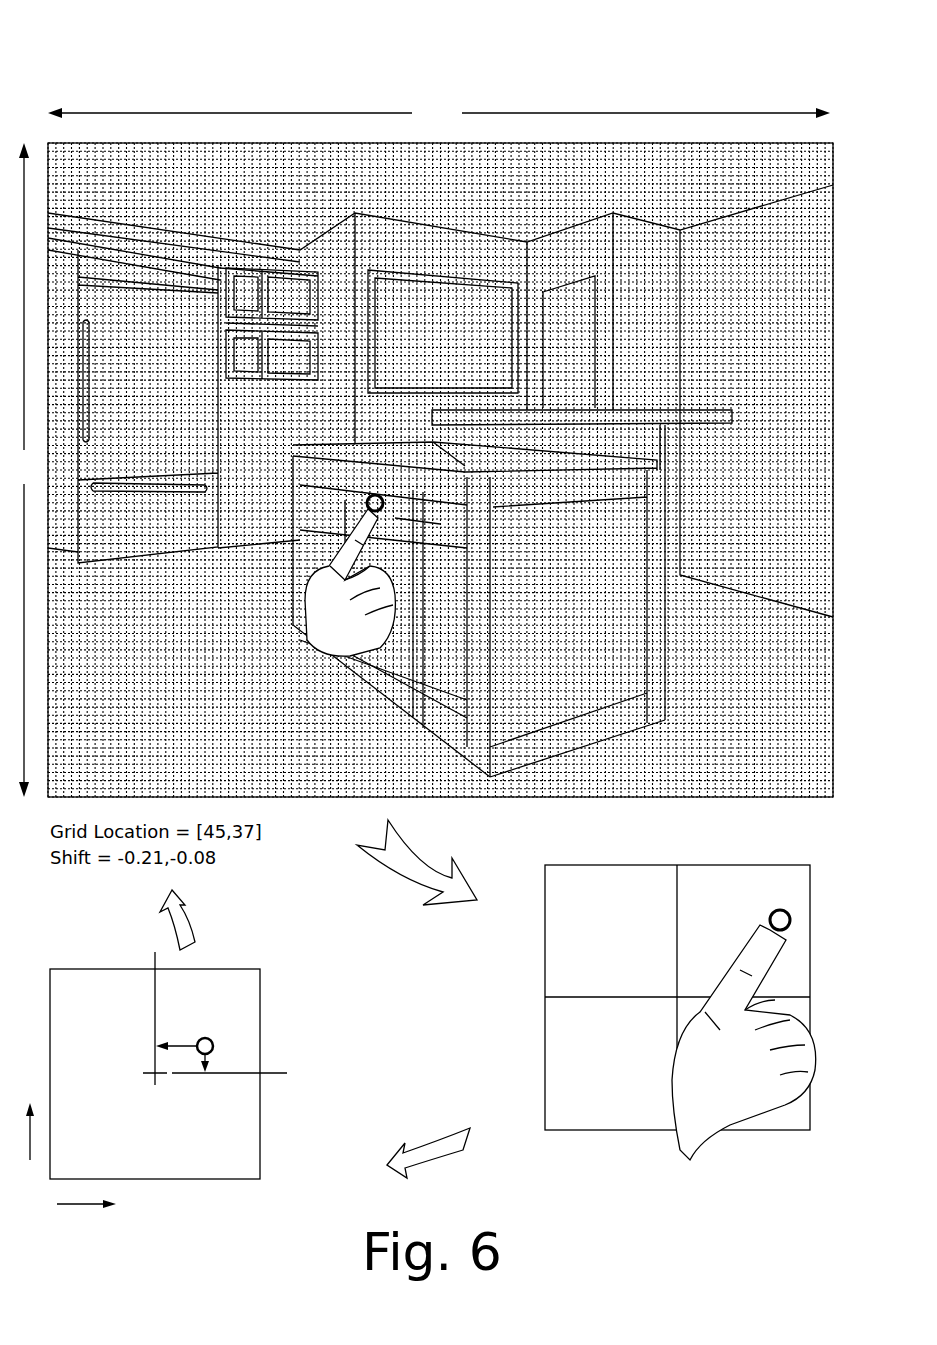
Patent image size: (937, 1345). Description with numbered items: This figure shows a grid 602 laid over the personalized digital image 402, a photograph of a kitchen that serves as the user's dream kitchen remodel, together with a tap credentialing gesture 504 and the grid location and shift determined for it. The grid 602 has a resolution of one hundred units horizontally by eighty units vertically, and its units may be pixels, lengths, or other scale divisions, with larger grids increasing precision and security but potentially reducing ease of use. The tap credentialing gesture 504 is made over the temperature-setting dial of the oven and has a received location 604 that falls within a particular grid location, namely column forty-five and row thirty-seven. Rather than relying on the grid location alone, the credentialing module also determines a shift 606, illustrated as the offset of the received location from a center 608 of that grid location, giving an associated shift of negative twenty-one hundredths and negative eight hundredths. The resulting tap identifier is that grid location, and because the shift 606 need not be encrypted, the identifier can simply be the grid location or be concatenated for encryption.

The personalized digital image 402 is at (420, 402).
The grid 602 is at (737, 106).
The tap credentialing gesture 504 is at (375, 480).
The received location 604 is at (748, 912).
The shift 606 is at (280, 1029).
The center 608 is at (170, 1090).